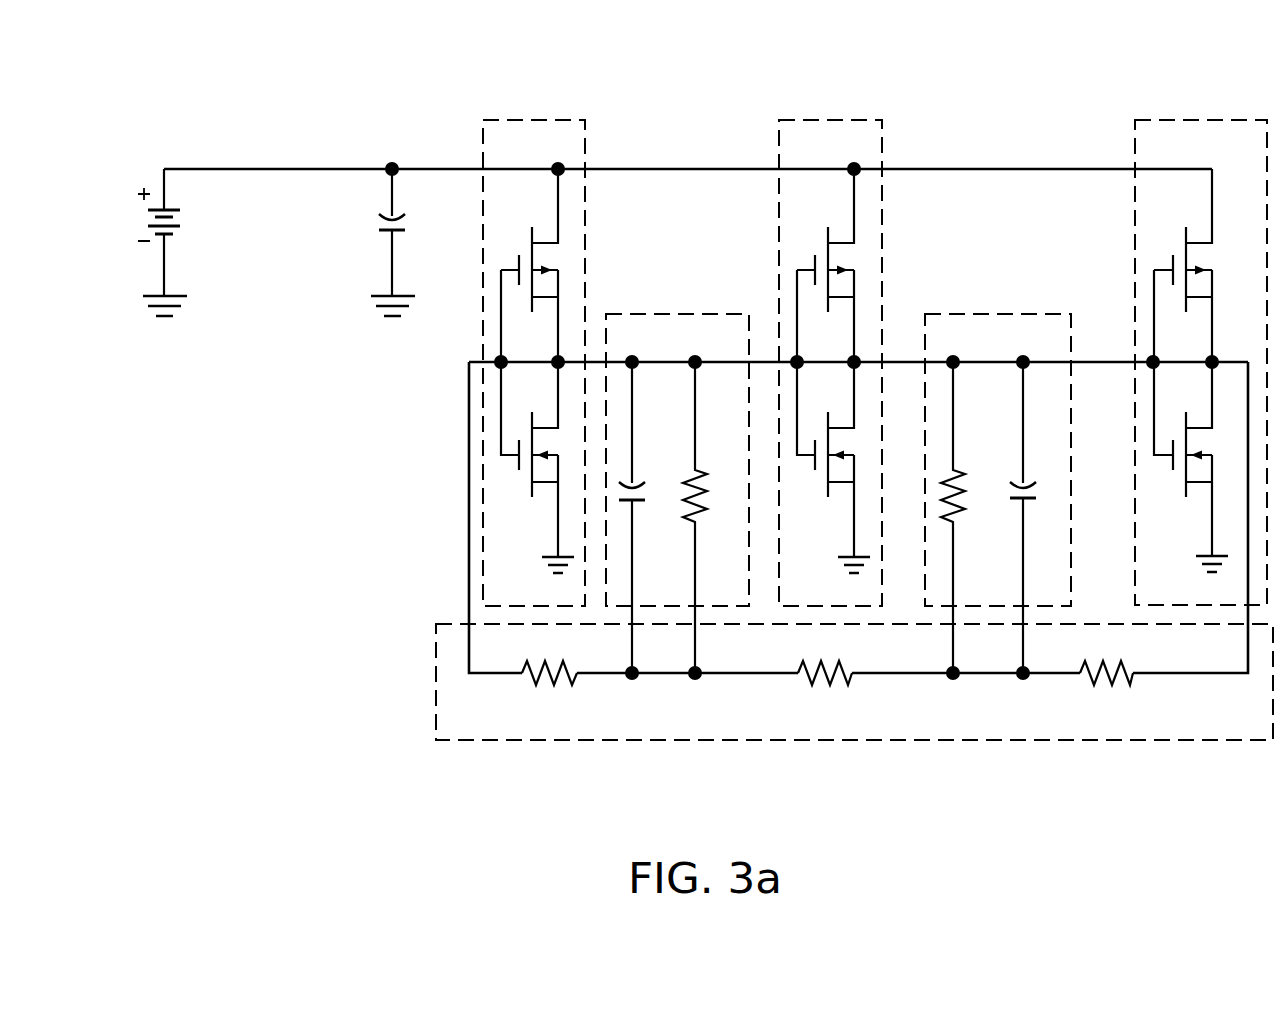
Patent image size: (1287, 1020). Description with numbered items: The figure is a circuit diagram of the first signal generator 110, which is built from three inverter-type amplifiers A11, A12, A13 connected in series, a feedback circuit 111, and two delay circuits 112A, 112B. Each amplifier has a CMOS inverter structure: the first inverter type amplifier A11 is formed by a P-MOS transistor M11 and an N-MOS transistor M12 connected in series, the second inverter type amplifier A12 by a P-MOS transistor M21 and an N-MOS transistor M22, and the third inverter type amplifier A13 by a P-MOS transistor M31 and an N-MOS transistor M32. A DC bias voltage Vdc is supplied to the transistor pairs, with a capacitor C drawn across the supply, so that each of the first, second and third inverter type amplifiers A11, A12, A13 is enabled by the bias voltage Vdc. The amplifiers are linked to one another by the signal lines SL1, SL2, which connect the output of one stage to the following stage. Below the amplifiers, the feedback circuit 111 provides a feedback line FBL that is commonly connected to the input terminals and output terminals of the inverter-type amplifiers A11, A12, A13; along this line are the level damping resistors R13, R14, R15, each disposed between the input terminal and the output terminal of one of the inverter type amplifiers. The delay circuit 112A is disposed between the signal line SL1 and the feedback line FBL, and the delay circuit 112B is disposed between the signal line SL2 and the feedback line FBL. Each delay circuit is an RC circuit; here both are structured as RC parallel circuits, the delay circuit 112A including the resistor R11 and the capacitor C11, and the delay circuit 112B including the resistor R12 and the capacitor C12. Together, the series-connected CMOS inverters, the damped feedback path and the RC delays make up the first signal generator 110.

The first signal generator 110 is at (275, 96).
The feedback circuit 111 is at (448, 623).
The delay circuit 112A is at (628, 312).
The delay circuit 112B is at (950, 312).
The first inverter type amplifier A11 is at (534, 118).
The second inverter type amplifier A12 is at (830, 118).
The third inverter type amplifier A13 is at (1190, 118).
The P-MOS transistor M11 is at (527, 265).
The N-MOS transistor M12 is at (537, 467).
The P-MOS transistor M21 is at (824, 265).
The N-MOS transistor M22 is at (833, 467).
The P-MOS transistor M31 is at (1179, 265).
The N-MOS transistor M32 is at (1191, 467).
The bias voltage Vdc is at (193, 242).
The capacitor C is at (403, 242).
The capacitor C11 is at (651, 517).
The capacitor C12 is at (1003, 517).
The resistor R11 is at (714, 517).
The resistor R12 is at (976, 517).
The level damping resistor R13 is at (549, 691).
The level damping resistor R14 is at (825, 691).
The level damping resistor R15 is at (1106, 690).
The signal line SL1 is at (661, 360).
The signal line SL2 is at (986, 360).
The feedback line FBL is at (897, 676).